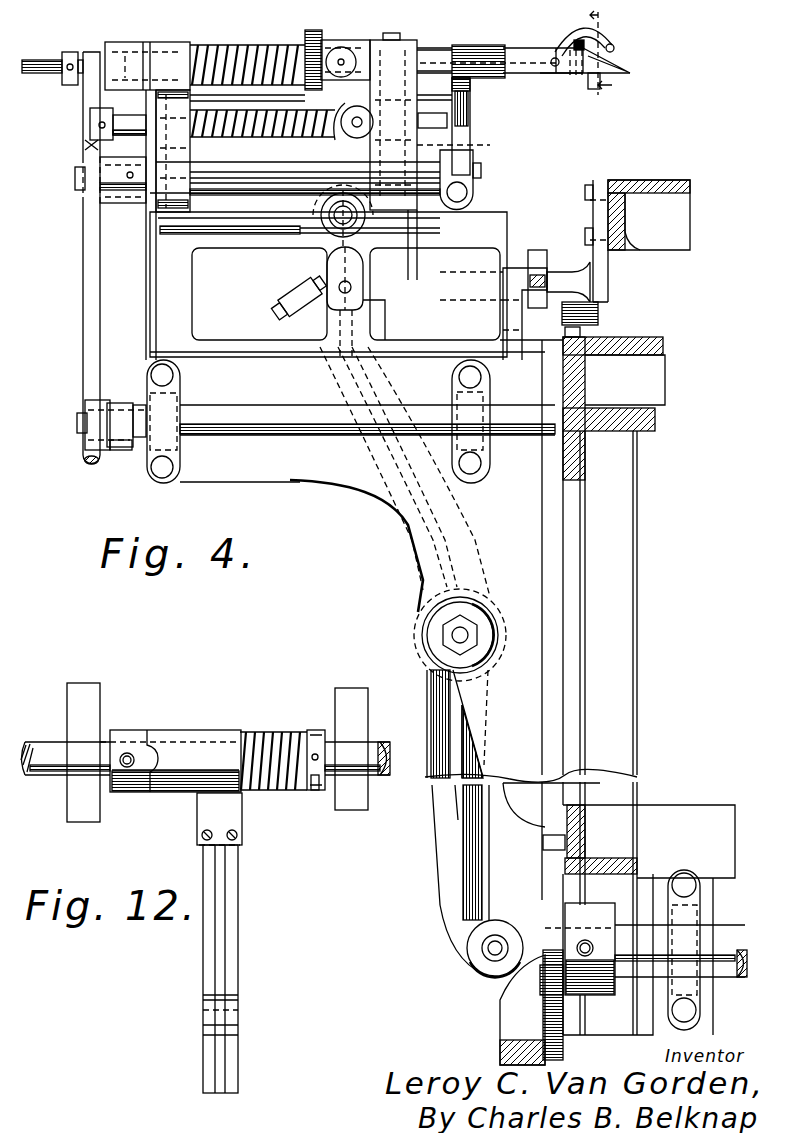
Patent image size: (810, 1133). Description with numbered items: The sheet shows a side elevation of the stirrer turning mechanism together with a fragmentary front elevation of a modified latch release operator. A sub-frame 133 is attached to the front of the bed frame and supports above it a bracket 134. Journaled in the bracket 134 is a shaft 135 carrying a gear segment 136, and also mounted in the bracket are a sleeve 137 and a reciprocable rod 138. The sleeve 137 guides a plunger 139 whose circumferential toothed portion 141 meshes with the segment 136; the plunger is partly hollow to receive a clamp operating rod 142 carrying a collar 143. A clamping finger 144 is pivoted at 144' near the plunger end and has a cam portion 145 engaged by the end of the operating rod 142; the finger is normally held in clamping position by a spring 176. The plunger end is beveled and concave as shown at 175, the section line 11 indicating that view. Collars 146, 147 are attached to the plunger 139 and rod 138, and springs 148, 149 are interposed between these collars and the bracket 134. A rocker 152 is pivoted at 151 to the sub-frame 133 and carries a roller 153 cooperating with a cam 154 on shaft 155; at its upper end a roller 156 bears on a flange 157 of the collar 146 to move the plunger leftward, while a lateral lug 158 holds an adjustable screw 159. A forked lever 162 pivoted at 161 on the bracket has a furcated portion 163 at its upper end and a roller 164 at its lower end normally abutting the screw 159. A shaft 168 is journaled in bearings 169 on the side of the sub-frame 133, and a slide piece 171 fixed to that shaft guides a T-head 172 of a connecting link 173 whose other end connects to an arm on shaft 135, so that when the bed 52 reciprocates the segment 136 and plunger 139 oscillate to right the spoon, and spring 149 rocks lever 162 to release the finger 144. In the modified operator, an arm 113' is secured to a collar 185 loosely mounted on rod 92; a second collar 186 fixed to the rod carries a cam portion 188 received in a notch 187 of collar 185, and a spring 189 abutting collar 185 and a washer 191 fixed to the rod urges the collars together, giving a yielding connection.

In FIG. 4, the clamp operating rod 142 is at (42, 60).
In FIG. 4, the collar 143 is at (68, 86).
In FIG. 4, the spring 148 is at (240, 36).
In FIG. 4, the collar 146 is at (315, 32).
In FIG. 4, the roller 156 is at (358, 48).
In FIG. 4, the sleeve 137 is at (440, 40).
In FIG. 4, the circumferential toothed portion 141 is at (492, 42).
In FIG. 4, the cam portion 145 is at (556, 48).
In FIG. 4, the clamping finger 144 is at (638, 34).
In FIG. 4, the beveled concave plunger end 175 is at (618, 65).
In FIG. 4, the section line 11 is at (615, 49).
In FIG. 4, the spring 176 is at (594, 90).
In FIG. 4, the pivot 144' is at (589, 104).
In FIG. 4, the plunger 139 is at (475, 92).
In FIG. 4, the rod 138 is at (449, 119).
In FIG. 4, the gear segment 136 is at (475, 132).
In FIG. 4, the furcated portion 163 is at (480, 147).
In FIG. 4, the shaft 135 is at (480, 182).
In FIG. 4, the bed 52 is at (642, 176).
In FIG. 4, the flange 157 is at (305, 88).
In FIG. 4, the spring 149 is at (245, 137).
In FIG. 4, the collar 147 is at (342, 133).
In FIG. 4, the bracket 134 is at (420, 233).
In FIG. 4, the pivot 161 is at (365, 219).
In FIG. 4, the forked lever 162 is at (370, 262).
In FIG. 4, the lateral lug 158 is at (327, 276).
In FIG. 4, the adjustable screw 159 is at (290, 295).
In FIG. 4, the roller 164 is at (365, 302).
In FIG. 4, the connecting link 173 is at (88, 338).
In FIG. 4, the T-head 172 is at (107, 403).
In FIG. 4, the slide piece 171 is at (119, 452).
In FIG. 4, the bearings 169 is at (181, 397).
In FIG. 4, the shaft 168 is at (282, 436).
In FIG. 4, the sub-frame 133 is at (322, 480).
In FIG. 4, the pivot 151 is at (457, 637).
In FIG. 4, the rocker 152 is at (438, 895).
In FIG. 4, the roller 153 is at (480, 972).
In FIG. 4, the cam 154 is at (508, 1010).
In FIG. 4, the shaft 155 is at (658, 962).
In FIG. 12, the rod 92 is at (40, 742).
In FIG. 12, the second collar 186 is at (128, 738).
In FIG. 12, the collar 185 is at (250, 735).
In FIG. 12, the spring 189 is at (298, 735).
In FIG. 12, the notch 187 is at (163, 752).
In FIG. 12, the cam portion 188 is at (152, 762).
In FIG. 12, the washer 191 is at (312, 790).
In FIG. 12, the latch operating arm 113' is at (255, 943).